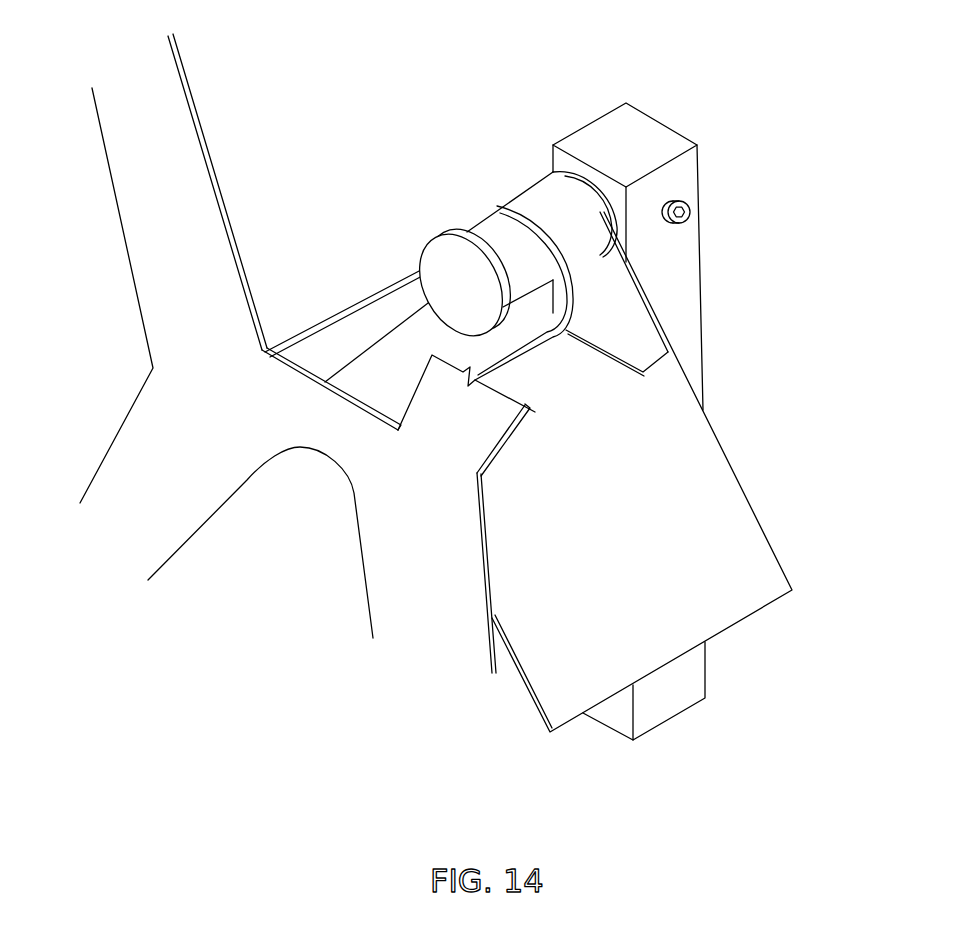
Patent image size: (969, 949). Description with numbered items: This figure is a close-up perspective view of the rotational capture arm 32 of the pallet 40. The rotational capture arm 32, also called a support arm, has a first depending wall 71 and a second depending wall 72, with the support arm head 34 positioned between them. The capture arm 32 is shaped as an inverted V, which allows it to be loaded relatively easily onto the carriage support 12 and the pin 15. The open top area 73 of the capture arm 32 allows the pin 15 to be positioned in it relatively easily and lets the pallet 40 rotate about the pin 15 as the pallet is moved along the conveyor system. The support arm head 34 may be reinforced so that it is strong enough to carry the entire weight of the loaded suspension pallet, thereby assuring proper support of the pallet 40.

The carriage support 12 is at (677, 298).
The pin 15 is at (440, 257).
The rotational capture arm 32 is at (688, 518).
The support arm head 34 is at (542, 193).
The pallet 40 is at (174, 220).
The first depending wall 71 is at (690, 455).
The second depending wall 72 is at (317, 327).
The open top area 73 is at (483, 348).